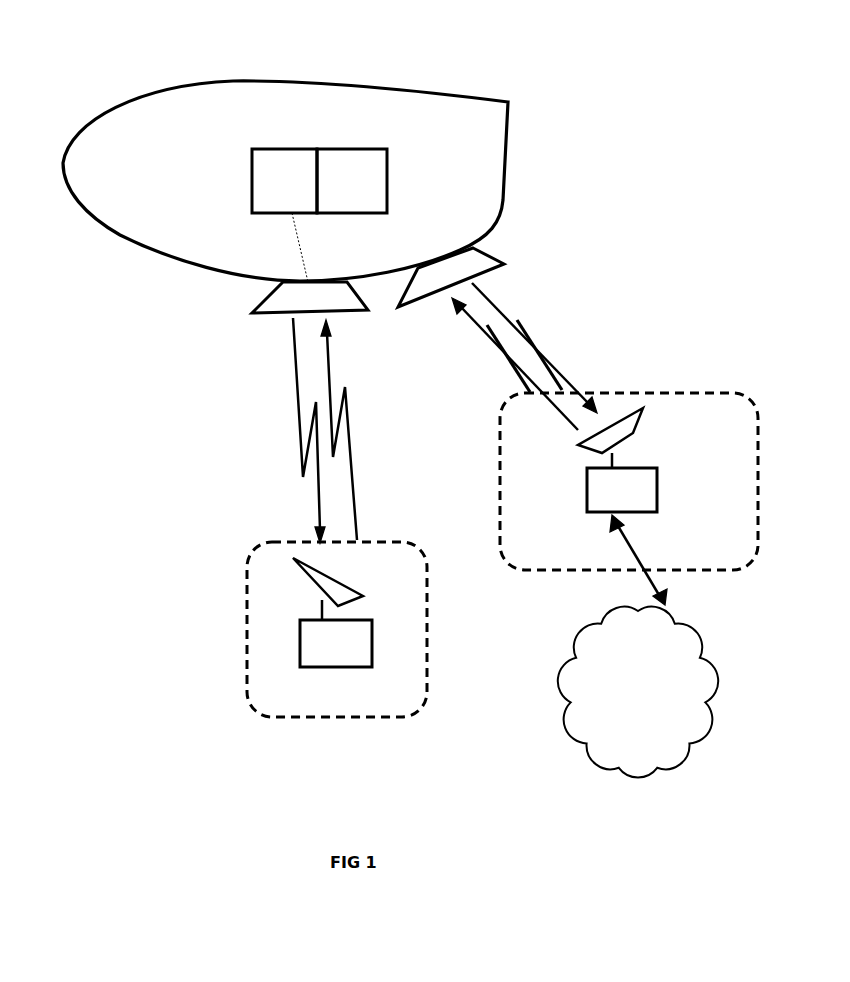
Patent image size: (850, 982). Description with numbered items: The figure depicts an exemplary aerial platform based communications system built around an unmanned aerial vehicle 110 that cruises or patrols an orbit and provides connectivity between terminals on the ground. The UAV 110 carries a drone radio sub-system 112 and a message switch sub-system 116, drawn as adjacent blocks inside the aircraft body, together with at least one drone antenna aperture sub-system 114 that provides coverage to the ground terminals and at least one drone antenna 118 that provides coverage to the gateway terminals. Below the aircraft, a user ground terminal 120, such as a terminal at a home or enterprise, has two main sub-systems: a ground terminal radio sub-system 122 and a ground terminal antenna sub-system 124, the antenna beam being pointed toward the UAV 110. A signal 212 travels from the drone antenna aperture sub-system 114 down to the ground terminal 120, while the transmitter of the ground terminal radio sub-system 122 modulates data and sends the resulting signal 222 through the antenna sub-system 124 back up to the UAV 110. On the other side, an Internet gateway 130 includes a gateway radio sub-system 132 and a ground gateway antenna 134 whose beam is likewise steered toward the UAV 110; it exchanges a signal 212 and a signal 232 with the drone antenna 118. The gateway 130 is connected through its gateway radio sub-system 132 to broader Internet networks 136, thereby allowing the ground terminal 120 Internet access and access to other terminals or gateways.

The unmanned aerial vehicle 110 is at (168, 80).
The drone radio sub-system 112 is at (252, 185).
The message switch sub-system 116 is at (387, 190).
The drone antenna aperture sub-system 114 is at (368, 310).
The drone antenna 118 is at (505, 262).
The ground terminal 120 is at (317, 660).
The ground terminal radio sub-system 122 is at (335, 667).
The ground terminal antenna sub-system 124 is at (298, 587).
The Internet gateway 130 is at (629, 456).
The gateway radio sub-system 132 is at (658, 497).
The ground gateway antenna 134 is at (580, 446).
The Internet networks 136 is at (715, 697).
The signal 212 is at (435, 413).
The signal 222 is at (340, 430).
The signal 232 is at (515, 364).